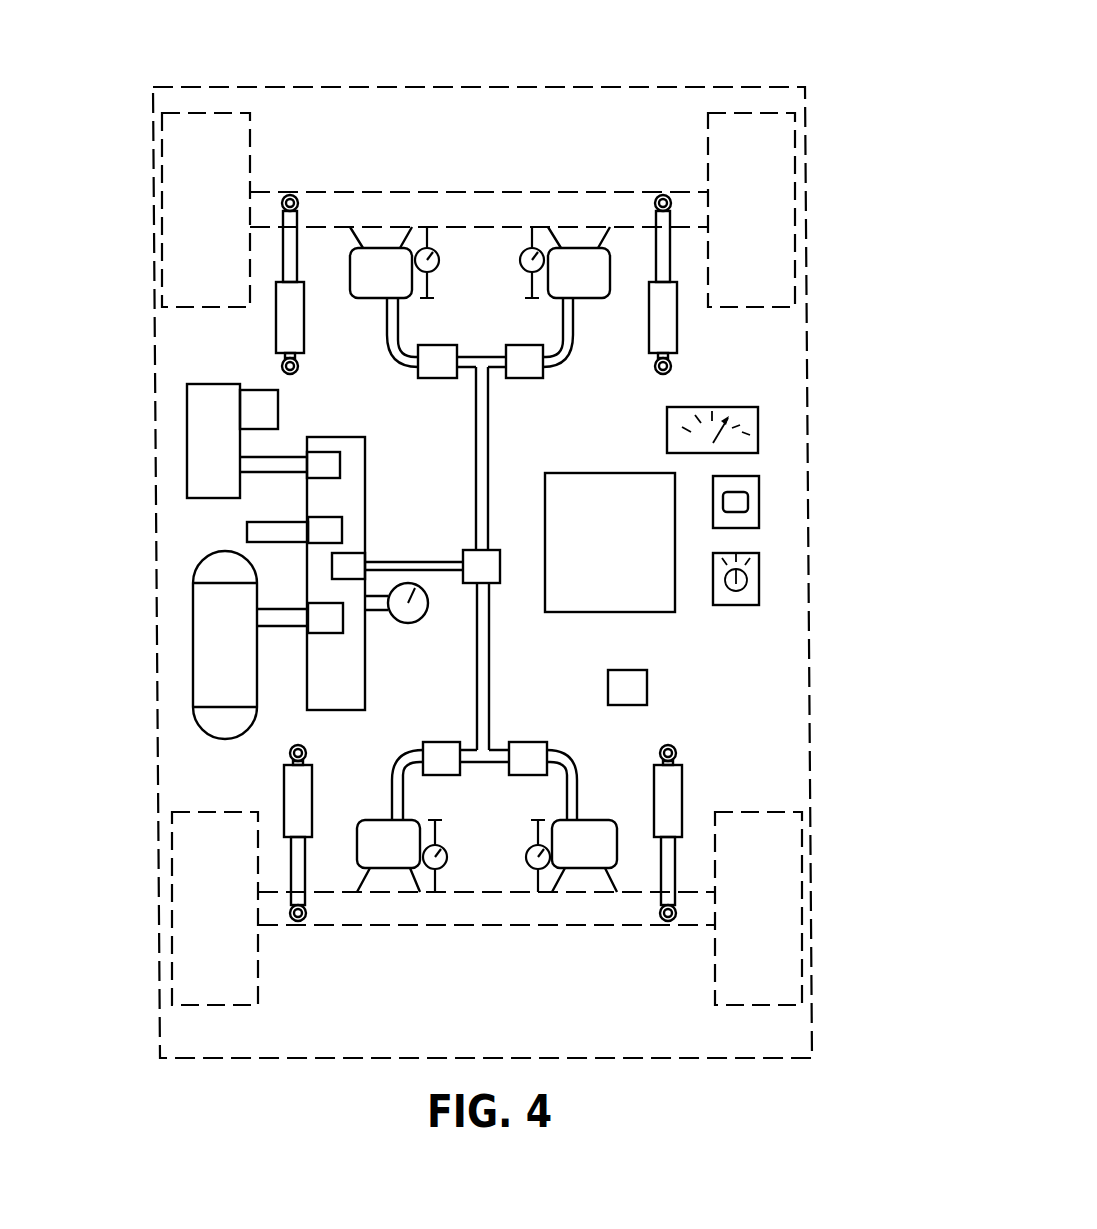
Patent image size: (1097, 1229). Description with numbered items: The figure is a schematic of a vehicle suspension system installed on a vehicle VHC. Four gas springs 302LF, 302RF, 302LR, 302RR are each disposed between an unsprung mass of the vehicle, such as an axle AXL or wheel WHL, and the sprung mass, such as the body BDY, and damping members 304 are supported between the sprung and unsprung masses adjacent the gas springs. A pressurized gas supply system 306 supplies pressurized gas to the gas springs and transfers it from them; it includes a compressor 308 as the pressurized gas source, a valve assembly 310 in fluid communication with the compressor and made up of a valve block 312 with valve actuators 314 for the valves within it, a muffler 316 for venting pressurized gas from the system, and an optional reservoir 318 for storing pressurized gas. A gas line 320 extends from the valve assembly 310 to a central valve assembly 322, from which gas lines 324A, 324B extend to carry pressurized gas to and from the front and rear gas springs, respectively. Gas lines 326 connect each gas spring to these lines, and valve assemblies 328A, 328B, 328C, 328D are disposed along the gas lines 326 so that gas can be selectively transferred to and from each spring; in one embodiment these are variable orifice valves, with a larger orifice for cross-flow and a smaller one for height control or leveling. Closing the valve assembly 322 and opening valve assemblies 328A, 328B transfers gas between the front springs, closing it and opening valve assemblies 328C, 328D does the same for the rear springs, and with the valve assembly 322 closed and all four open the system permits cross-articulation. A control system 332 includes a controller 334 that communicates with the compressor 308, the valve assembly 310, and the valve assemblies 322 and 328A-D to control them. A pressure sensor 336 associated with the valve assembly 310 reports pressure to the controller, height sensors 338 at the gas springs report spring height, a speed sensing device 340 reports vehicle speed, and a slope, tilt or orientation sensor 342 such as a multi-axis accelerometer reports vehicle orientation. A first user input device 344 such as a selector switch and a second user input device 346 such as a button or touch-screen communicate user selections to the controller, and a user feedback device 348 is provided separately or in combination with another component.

The vehicle VHC is at (748, 46).
The body BDY is at (557, 87).
The wheel WHL is at (188, 173).
The axle AXL is at (481, 191).
The left front gas spring 302LF is at (385, 265).
The right front gas spring 302RF is at (585, 265).
The left rear gas spring 302LR is at (387, 855).
The right rear gas spring 302RR is at (585, 853).
The damping member 304 is at (288, 319).
The pressurized gas supply system 306 is at (195, 523).
The compressor 308 is at (203, 430).
The valve assembly 310 is at (295, 590).
The valve block 312 is at (350, 435).
The valve actuators 314 is at (331, 522).
The muffler 316 is at (257, 534).
The reservoir 318 is at (205, 683).
The gas line 320 is at (448, 568).
The valve assembly 322 is at (497, 566).
The gas line 324A is at (483, 454).
The gas line 324B is at (483, 684).
The gas lines 326 is at (385, 318).
The valve assembly 328A is at (436, 378).
The valve assembly 328B is at (524, 378).
The valve assembly 328C is at (442, 745).
The valve assembly 328D is at (527, 745).
The control system 332 is at (690, 650).
The controller 334 is at (610, 542).
The pressure sensor 336 is at (415, 612).
The height sensors 338 is at (520, 259).
The speed sensing device 340 is at (750, 428).
The slope, tilt or orientation sensor 342 is at (628, 668).
The first user input device 344 is at (752, 580).
The second user input device 346 is at (750, 517).
The user feedback device 348 is at (737, 497).